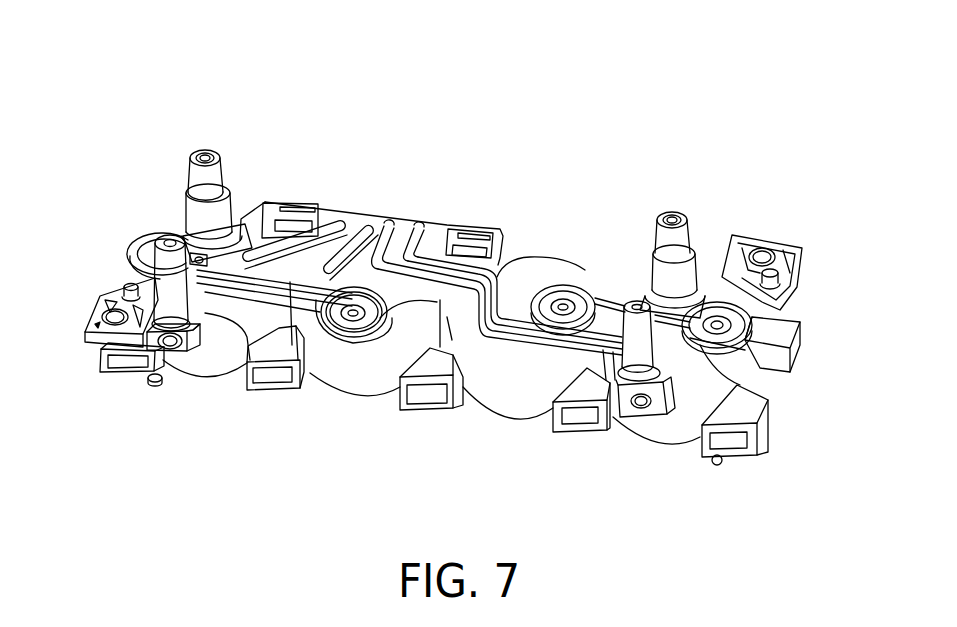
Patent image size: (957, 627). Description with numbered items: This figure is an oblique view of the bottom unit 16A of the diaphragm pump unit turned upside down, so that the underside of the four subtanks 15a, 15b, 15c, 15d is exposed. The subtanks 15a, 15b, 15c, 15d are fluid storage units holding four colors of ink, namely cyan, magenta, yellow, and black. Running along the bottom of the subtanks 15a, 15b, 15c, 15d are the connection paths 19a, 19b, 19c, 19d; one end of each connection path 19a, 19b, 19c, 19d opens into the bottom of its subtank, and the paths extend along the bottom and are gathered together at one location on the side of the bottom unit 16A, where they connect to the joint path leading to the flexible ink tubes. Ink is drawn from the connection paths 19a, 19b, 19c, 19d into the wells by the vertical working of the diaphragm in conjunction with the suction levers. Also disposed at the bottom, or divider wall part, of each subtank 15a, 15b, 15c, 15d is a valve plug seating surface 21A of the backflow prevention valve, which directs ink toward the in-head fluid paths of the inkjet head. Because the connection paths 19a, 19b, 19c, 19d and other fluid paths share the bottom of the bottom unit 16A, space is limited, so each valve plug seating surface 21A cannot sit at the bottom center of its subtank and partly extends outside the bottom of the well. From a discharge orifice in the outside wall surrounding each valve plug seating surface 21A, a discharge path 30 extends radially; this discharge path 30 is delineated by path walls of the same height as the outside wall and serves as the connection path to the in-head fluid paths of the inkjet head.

The bottom unit 16A is at (125, 108).
The valve plug seating surface 21A is at (148, 218).
The discharge path 30 is at (245, 232).
The connection path 19a is at (350, 220).
The connection path 19b is at (363, 225).
The connection path 19c is at (392, 223).
The connection path 19d is at (422, 224).
The subtank 15a is at (218, 383).
The subtank 15b is at (387, 407).
The subtank 15c is at (505, 427).
The subtank 15d is at (658, 442).